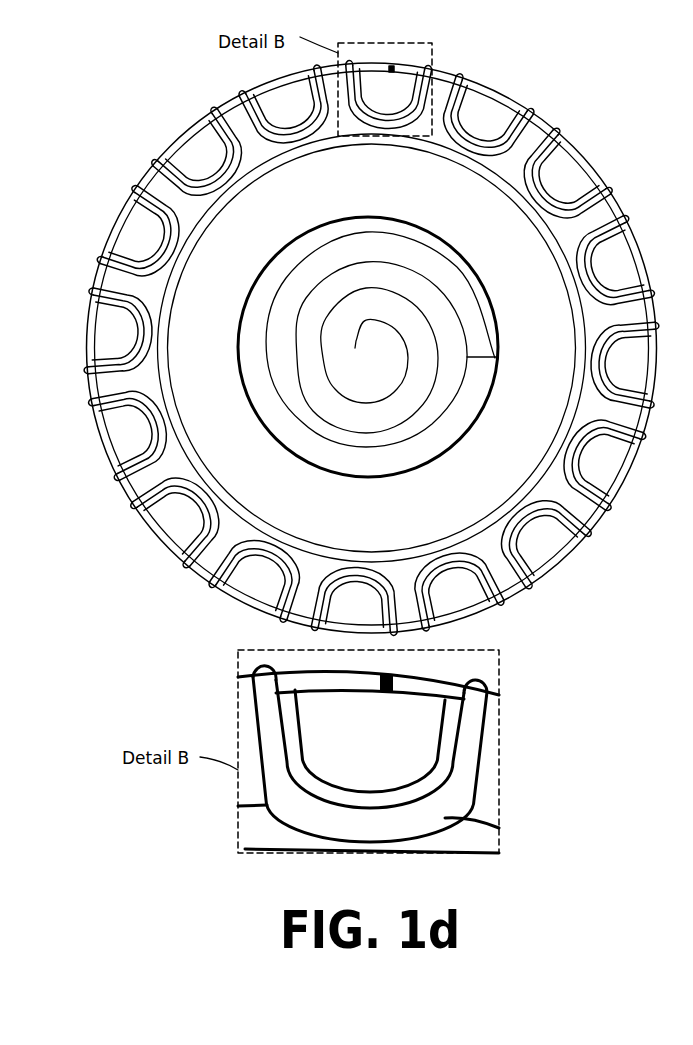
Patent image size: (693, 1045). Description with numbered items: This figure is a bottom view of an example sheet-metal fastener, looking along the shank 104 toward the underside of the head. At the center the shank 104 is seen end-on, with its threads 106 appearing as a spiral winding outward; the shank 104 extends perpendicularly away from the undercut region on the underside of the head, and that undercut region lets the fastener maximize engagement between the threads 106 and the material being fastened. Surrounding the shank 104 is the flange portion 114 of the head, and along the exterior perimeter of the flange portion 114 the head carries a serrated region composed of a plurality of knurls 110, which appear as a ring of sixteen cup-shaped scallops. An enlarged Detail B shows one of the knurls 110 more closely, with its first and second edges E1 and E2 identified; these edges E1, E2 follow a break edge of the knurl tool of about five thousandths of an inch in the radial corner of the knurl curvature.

The shank 104 is at (384, 214).
The threads 106 is at (288, 269).
The knurls 110 is at (487, 102).
The flange portion 114 is at (143, 174).
The first edge E1 is at (395, 817).
The second edge E2 is at (358, 773).